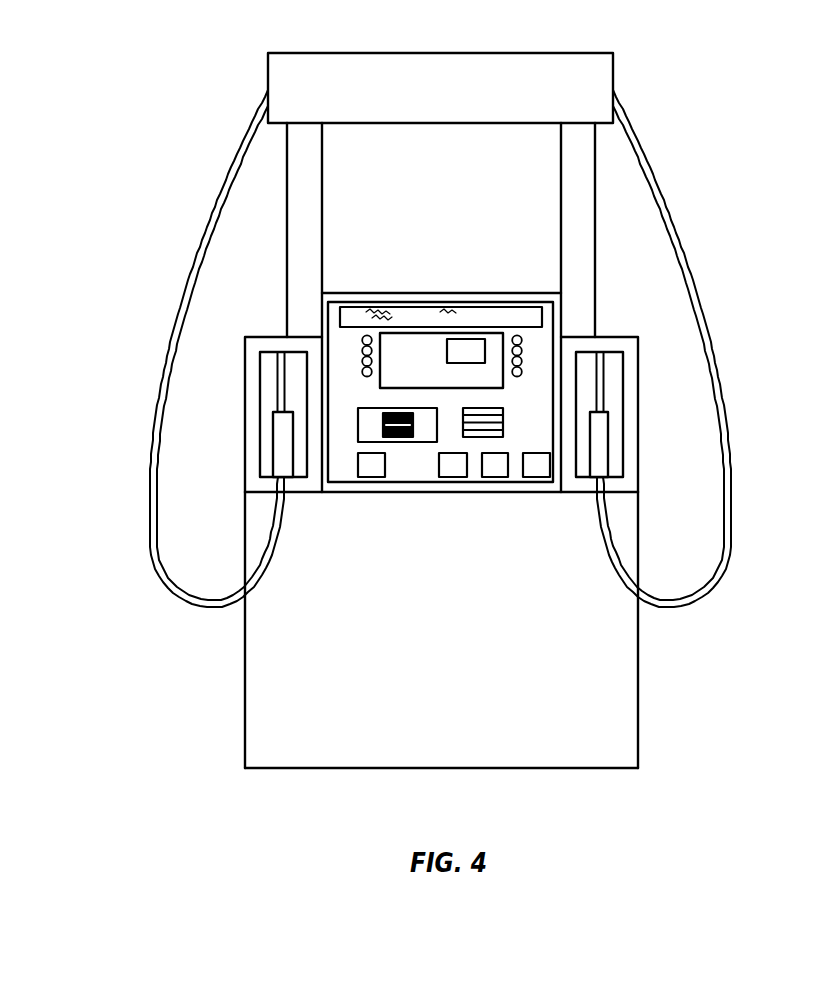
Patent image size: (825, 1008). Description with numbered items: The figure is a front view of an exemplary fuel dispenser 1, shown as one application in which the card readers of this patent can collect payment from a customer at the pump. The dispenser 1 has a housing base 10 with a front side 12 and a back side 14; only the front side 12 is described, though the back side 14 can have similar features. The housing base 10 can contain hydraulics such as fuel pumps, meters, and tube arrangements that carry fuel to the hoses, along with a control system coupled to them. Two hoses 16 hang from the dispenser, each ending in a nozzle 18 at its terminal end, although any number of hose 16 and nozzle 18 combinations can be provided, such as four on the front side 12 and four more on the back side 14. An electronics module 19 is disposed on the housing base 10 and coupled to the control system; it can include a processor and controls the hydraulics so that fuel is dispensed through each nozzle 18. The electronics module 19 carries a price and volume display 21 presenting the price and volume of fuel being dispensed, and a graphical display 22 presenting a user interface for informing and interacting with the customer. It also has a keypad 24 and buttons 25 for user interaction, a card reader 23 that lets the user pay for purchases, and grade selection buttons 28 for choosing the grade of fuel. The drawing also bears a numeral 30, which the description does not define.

The fuel dispenser 1 is at (448, 440).
The housing base 10 is at (627, 667).
The front side 12 is at (260, 737).
The back side 14 is at (664, 510).
The hose 16 is at (163, 375).
The nozzle 18 is at (283, 433).
The electronics module 19 is at (515, 293).
The price and volume display 21 is at (542, 318).
The graphical display 22 is at (390, 338).
The card reader 23 is at (503, 424).
The keypad 24 is at (385, 440).
The buttons 25 is at (525, 347).
The grade selection buttons 28 is at (540, 467).
The keypad 30 is at (467, 333).